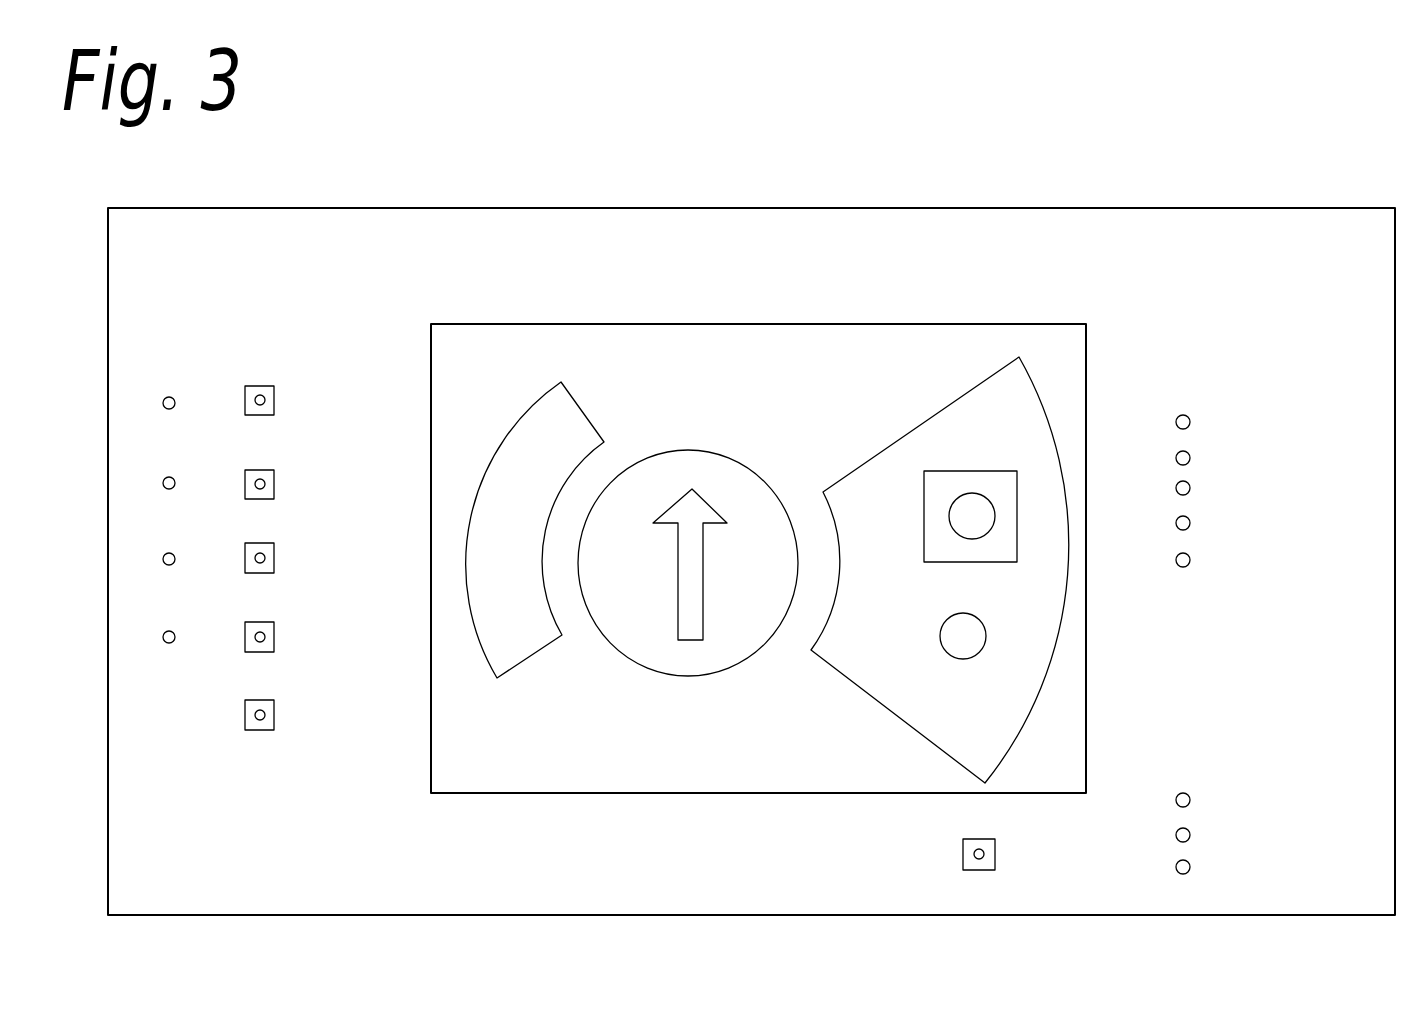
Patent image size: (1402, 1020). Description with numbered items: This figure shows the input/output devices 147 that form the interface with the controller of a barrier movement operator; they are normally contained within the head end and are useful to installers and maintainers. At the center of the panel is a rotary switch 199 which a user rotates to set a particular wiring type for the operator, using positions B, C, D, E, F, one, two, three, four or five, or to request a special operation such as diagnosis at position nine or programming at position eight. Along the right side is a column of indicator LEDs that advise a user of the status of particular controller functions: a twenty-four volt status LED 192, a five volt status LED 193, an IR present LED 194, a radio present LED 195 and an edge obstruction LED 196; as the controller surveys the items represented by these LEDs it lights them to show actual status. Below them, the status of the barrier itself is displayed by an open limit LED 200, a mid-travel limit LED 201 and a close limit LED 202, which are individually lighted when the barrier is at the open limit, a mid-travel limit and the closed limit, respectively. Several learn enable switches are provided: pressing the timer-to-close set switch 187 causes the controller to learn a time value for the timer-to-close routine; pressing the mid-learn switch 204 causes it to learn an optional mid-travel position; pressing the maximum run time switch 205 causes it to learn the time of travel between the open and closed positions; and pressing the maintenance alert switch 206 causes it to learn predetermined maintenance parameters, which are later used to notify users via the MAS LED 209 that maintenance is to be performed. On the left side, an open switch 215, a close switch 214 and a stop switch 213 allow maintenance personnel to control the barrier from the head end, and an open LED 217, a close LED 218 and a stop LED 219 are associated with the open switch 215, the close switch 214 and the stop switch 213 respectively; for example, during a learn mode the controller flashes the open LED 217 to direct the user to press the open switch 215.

The input/output devices 147 is at (769, 272).
The timer-to-close set switch 187 is at (974, 507).
The 24V status LED 192 is at (1177, 417).
The 5V status LED 193 is at (1177, 453).
The IR present LED 194 is at (1177, 483).
The radio present LED 195 is at (1177, 518).
The edge obstruction LED 196 is at (1177, 555).
The rotary switch 199 is at (744, 576).
The open limit LED 200 is at (1177, 795).
The mid-travel limit LED 201 is at (1177, 830).
The close limit LED 202 is at (1177, 862).
The mid-learn switch 204 is at (963, 850).
The maximum run time set switch 205 is at (268, 702).
The maintenance alert switch 206 is at (262, 622).
The MAS LED 209 is at (174, 633).
The stop switch 213 is at (262, 543).
The close switch 214 is at (262, 470).
The open switch 215 is at (260, 386).
The open LED 217 is at (174, 399).
The close LED 218 is at (174, 479).
The stop LED 219 is at (174, 555).